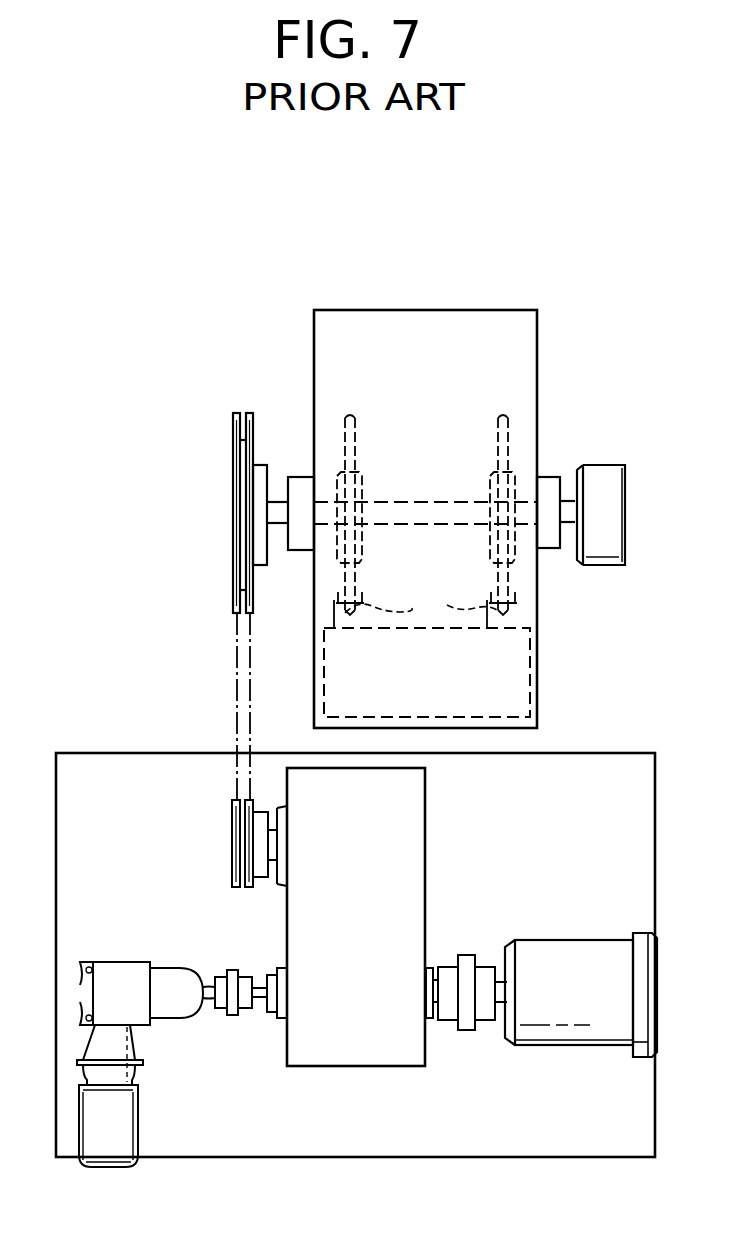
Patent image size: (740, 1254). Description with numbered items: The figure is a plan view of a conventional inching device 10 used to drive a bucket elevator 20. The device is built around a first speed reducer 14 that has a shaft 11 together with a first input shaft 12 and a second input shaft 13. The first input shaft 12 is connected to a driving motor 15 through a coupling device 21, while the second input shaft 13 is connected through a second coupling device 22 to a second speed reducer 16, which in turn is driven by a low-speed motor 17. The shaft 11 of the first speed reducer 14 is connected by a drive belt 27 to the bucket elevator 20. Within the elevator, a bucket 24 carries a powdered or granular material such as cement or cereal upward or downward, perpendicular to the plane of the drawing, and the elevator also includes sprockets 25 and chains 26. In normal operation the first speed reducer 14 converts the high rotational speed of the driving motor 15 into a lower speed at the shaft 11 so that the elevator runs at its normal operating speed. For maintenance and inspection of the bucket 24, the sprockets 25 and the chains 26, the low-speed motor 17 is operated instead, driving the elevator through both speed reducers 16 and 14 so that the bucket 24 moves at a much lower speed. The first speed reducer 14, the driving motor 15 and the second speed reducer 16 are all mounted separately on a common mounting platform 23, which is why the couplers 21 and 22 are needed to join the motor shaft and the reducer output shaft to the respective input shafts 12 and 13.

The inching device 10 is at (498, 918).
The shaft 11 is at (272, 843).
The first input shaft 12 is at (433, 983).
The second input shaft 13 is at (255, 987).
The first speed reducer 14 is at (427, 818).
The driving motor 15 is at (567, 938).
The second speed reducer 16 is at (135, 957).
The low-speed motor 17 is at (142, 1135).
The bucket elevator 20 is at (548, 432).
The coupling device 21 is at (470, 1030).
The second coupling device 22 is at (233, 1018).
The common mounting platform 23 is at (633, 762).
The bucket 24 is at (528, 682).
The sprockets 25 is at (348, 410).
The chains 26 is at (422, 601).
The drive belt 27 is at (232, 690).